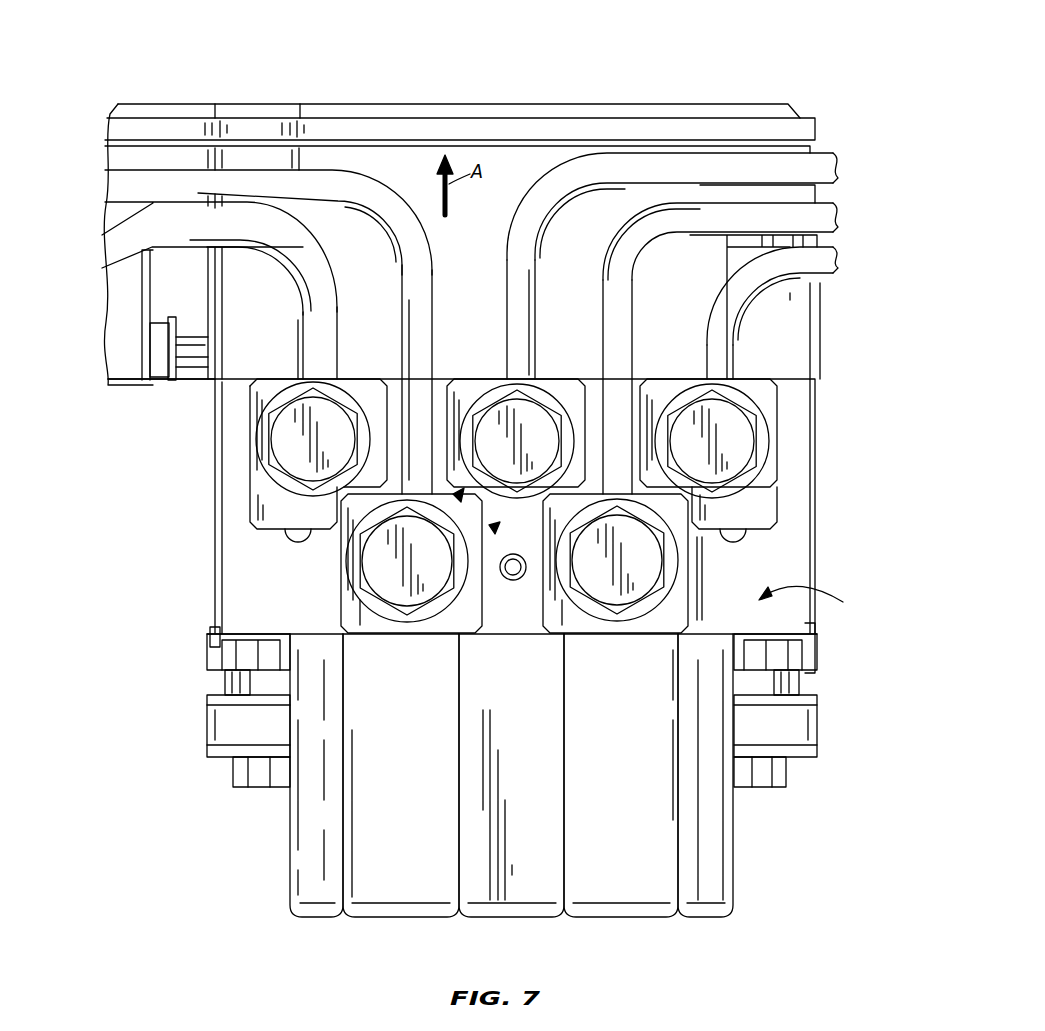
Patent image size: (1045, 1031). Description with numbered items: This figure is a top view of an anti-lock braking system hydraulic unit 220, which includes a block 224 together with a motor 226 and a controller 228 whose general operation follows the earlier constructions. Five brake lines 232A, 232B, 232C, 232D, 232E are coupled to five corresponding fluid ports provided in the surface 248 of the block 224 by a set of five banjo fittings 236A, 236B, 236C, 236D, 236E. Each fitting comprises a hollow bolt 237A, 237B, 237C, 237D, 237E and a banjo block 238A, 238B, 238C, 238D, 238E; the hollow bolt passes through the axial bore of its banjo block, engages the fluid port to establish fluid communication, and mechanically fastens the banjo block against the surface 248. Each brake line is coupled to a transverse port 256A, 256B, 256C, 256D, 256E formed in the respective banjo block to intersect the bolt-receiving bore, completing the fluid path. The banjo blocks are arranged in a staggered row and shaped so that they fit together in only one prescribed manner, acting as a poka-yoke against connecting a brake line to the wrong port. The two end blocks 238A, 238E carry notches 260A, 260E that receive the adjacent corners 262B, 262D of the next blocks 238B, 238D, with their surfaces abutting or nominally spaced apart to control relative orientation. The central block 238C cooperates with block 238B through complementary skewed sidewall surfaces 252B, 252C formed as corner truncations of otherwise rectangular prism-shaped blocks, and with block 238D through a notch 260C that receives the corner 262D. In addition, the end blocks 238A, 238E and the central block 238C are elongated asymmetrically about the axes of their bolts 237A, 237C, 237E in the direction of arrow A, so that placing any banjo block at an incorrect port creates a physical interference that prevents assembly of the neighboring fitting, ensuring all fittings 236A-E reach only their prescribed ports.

The anti-lock braking system hydraulic unit 220 is at (152, 76).
The block 224 is at (783, 572).
The motor 226 is at (436, 879).
The controller 228 is at (485, 128).
The brake line 232A is at (247, 222).
The brake line 232B is at (384, 192).
The brake line 232C is at (553, 183).
The brake line 232D is at (687, 213).
The brake line 232E is at (833, 260).
The banjo fitting 236A is at (137, 403).
The banjo fitting 236B is at (143, 597).
The banjo fitting 236C is at (633, 727).
The banjo fitting 236D is at (798, 865).
The banjo fitting 236E is at (870, 362).
The hollow bolt 237A is at (288, 434).
The hollow bolt 237B is at (378, 573).
The hollow bolt 237C is at (550, 497).
The hollow bolt 237D is at (655, 572).
The hollow bolt 237E is at (737, 430).
The banjo block 238A is at (250, 482).
The banjo block 238B is at (341, 608).
The banjo block 238C is at (520, 486).
The banjo block 238D is at (630, 598).
The banjo block 238E is at (780, 463).
The surface 248 is at (817, 601).
The skewed sidewall surface 252B is at (460, 496).
The skewed sidewall surface 252C is at (494, 530).
The transverse port 256A is at (325, 353).
The transverse port 256B is at (437, 367).
The transverse port 256C is at (520, 357).
The transverse port 256D is at (640, 373).
The transverse port 256E is at (720, 370).
The notch 260A is at (325, 504).
The notch 260C is at (578, 392).
The notch 260E is at (705, 512).
The corner 262B is at (372, 549).
The corner 262D is at (626, 603).